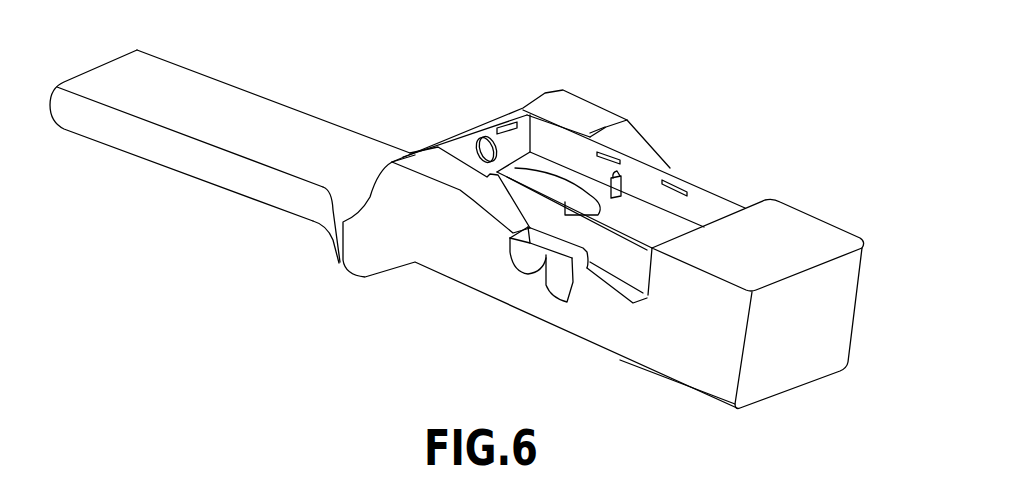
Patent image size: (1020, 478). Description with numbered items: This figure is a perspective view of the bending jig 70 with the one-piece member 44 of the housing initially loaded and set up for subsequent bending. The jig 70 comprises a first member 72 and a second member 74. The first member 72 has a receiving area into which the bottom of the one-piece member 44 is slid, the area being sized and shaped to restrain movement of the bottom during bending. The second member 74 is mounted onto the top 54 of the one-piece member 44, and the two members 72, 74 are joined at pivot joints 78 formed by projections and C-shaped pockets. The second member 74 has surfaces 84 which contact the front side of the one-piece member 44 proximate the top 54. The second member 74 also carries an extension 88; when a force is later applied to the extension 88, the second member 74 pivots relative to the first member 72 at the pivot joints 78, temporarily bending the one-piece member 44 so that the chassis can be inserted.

The bending jig 70 is at (850, 172).
The first member 72 is at (820, 310).
The second member 74 is at (353, 235).
The pivot joints 78 is at (522, 262).
The surfaces 84 is at (562, 125).
The extension 88 is at (180, 123).
The top 54 is at (485, 122).
The one-piece member 44 is at (627, 173).